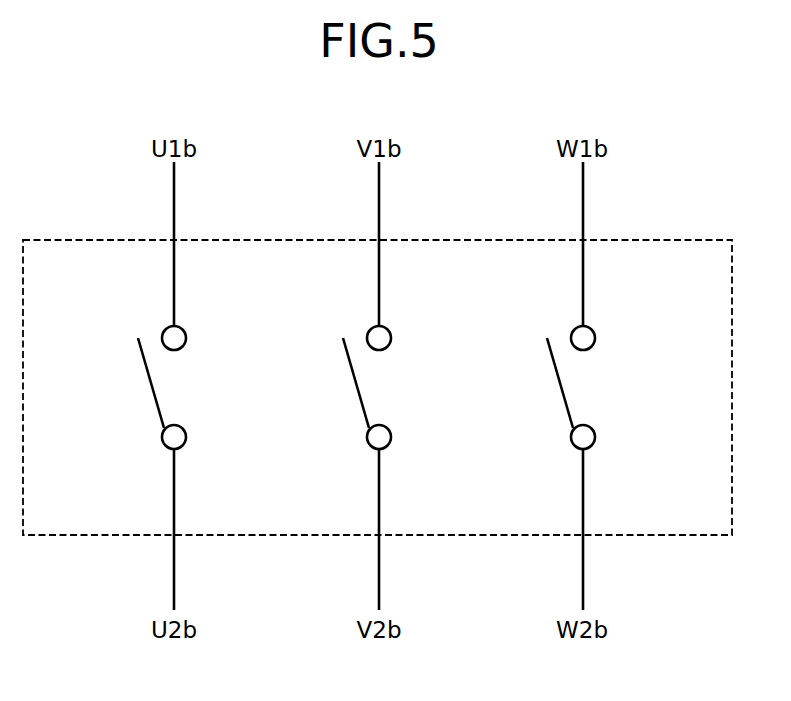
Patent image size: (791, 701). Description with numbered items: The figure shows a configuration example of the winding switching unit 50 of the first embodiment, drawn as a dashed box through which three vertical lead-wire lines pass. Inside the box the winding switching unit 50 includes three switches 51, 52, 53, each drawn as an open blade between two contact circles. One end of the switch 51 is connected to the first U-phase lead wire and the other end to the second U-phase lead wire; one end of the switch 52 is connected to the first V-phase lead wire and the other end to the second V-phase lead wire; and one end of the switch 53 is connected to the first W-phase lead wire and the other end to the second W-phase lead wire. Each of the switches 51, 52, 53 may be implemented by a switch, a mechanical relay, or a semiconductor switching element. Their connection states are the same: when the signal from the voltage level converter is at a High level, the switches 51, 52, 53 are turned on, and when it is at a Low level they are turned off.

The winding switching unit 50 is at (683, 239).
The switch 51 is at (153, 407).
The switch 52 is at (358, 407).
The switch 53 is at (563, 407).